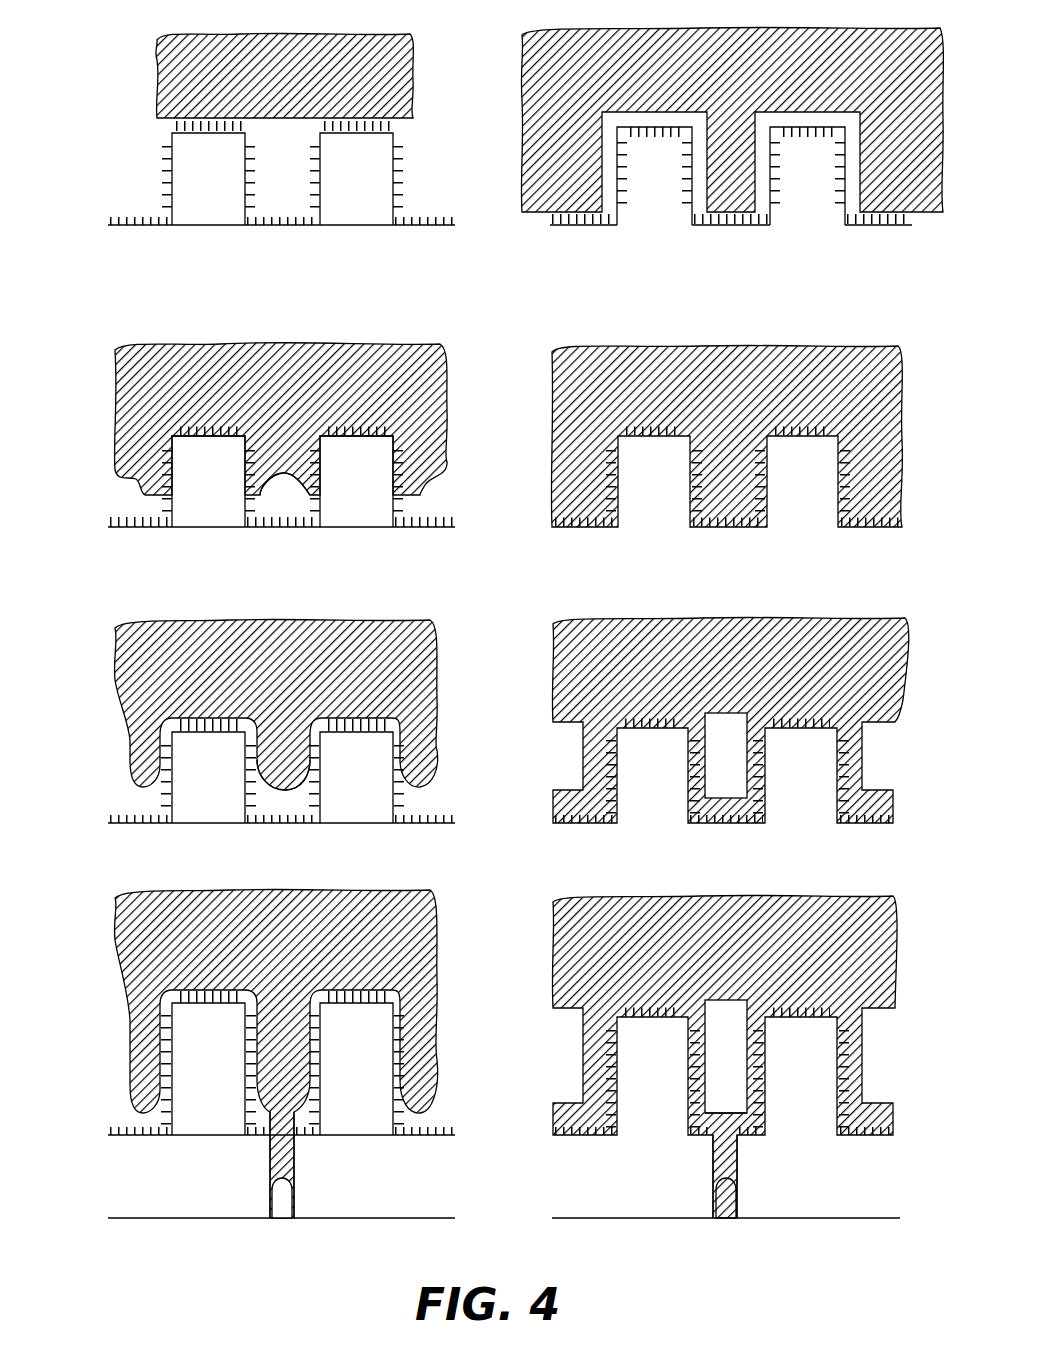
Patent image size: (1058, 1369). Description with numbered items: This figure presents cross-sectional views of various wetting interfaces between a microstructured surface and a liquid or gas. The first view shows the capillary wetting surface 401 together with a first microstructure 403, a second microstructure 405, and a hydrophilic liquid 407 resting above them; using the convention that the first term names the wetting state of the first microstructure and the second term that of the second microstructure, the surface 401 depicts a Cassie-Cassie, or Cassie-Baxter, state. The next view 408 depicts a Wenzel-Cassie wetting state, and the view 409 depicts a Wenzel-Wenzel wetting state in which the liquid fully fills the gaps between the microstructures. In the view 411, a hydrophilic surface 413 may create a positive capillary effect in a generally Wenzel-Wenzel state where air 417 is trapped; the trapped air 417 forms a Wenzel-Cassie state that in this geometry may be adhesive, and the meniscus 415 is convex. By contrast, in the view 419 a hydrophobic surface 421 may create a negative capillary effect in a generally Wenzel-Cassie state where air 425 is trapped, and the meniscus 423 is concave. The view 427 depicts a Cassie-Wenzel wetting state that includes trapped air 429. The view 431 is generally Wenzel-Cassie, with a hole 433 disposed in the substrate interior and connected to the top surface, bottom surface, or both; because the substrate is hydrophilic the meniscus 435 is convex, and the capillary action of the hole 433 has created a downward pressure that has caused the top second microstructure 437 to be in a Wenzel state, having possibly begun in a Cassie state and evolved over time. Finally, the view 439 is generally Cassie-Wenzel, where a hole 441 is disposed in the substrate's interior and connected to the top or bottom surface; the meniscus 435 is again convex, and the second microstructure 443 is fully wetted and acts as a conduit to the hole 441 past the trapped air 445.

The surface 401 is at (276, 154).
The first microstructure 403 is at (365, 190).
The second microstructure 405 is at (430, 220).
The hydrophilic liquid 407 is at (343, 44).
The Wenzel-Cassie wetting state 408 is at (877, 250).
The Wenzel-Wenzel wetting state 409 is at (879, 546).
The positive capillary wetting state 411 is at (266, 468).
The hydrophilic surface 413 is at (380, 510).
The meniscus 415 is at (262, 490).
The air 417 is at (296, 496).
The negative capillary wetting state 419 is at (266, 753).
The hydrophobic surface 421 is at (380, 812).
The meniscus 423 is at (282, 785).
The air 425 is at (288, 800).
The Cassie-Wenzel wetting state 427 is at (755, 756).
The trapped air 429 is at (725, 758).
The Wenzel-Cassie wetting state with hole 431 is at (390, 1082).
The hole 433 is at (296, 1168).
The meniscus 435 is at (282, 1178).
The second microstructure 437 is at (390, 982).
The Cassie-Wenzel wetting state with hole 439 is at (749, 1091).
The hole 441 is at (740, 1205).
The second microstructure 443 is at (745, 1065).
The trapped air 445 is at (730, 1095).